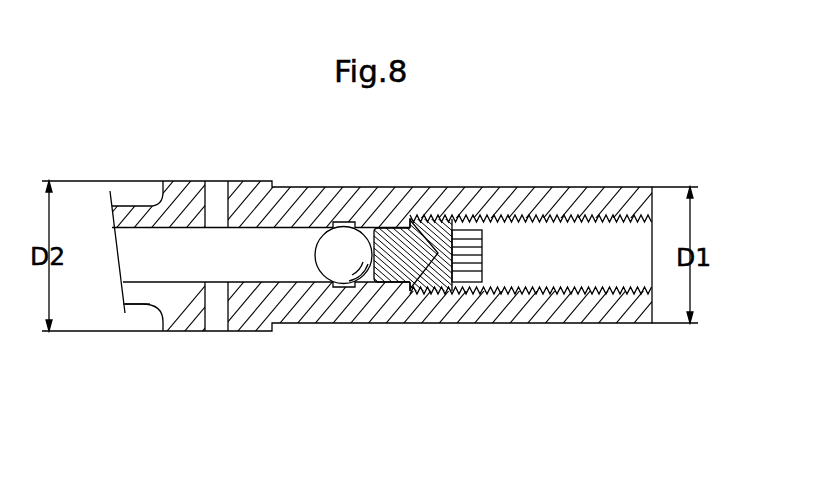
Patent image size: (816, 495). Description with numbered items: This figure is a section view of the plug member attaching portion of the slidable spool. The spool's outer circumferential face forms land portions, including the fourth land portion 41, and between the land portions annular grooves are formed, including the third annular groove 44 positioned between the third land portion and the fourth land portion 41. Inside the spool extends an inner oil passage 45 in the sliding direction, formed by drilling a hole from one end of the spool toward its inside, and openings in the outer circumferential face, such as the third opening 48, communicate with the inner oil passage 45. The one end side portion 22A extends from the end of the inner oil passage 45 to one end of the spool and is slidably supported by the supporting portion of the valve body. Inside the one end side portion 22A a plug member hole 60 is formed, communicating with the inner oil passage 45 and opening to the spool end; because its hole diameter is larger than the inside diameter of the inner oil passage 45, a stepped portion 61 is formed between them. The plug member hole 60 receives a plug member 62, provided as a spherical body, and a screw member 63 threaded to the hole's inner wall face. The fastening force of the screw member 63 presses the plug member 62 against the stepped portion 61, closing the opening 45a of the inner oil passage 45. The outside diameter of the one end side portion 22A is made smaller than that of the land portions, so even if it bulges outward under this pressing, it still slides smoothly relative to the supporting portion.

The one end side portion 22A is at (528, 187).
The fourth land portion 41 is at (184, 181).
The third annular groove 44 is at (137, 307).
The inner oil passage 45 is at (282, 262).
The opening 45a is at (312, 254).
The third opening 48 is at (213, 181).
The plug member hole 60 is at (536, 219).
The stepped portion 61 is at (358, 222).
The plug member 62 is at (345, 265).
The screw member 63 is at (435, 216).